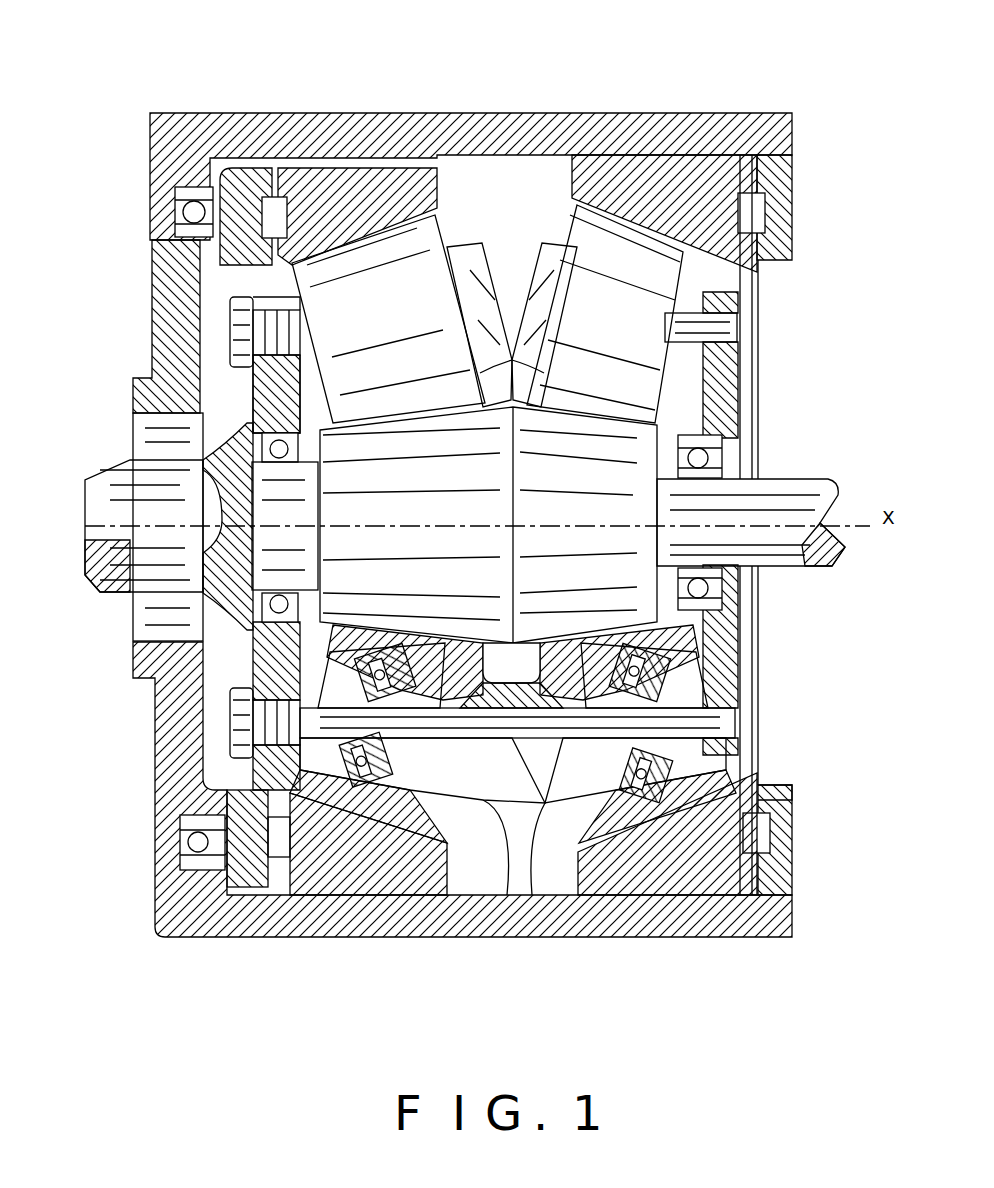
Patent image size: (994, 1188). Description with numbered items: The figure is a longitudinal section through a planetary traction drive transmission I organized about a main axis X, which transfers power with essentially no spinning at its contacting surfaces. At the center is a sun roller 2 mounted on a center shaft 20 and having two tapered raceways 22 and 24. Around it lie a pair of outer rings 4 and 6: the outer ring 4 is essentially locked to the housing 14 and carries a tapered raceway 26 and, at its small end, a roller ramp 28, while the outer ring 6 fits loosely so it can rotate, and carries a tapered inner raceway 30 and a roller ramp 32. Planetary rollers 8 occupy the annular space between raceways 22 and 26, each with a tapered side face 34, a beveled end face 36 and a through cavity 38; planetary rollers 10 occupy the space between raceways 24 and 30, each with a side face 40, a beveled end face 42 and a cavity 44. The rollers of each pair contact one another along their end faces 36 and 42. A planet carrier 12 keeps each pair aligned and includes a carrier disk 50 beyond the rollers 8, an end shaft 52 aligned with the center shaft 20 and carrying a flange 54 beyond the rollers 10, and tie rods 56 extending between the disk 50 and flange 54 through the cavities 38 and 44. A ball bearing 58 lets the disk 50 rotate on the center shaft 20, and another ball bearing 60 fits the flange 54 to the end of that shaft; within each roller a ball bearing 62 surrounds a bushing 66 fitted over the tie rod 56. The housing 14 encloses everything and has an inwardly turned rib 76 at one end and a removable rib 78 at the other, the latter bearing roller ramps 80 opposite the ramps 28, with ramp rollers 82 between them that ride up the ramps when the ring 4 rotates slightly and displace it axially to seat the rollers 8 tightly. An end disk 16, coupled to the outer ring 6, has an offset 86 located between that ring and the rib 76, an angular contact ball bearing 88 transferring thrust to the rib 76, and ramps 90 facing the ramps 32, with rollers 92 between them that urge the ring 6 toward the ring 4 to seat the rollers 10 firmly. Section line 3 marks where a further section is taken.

The planetary traction drive transmission I is at (745, 97).
The sun roller 2 is at (617, 465).
The section line 3 is at (592, 620).
The outer ring 4 is at (668, 165).
The outer ring 6 is at (350, 195).
The planetary rollers 8 is at (618, 162).
The planetary rollers 10 is at (414, 270).
The planet carrier 12 is at (745, 425).
The housing 14 is at (283, 132).
The end disk 16 is at (157, 290).
The center shaft 20 is at (830, 503).
The tapered raceway 22 is at (558, 402).
The tapered raceway 24 is at (420, 402).
The tapered raceway 26 is at (622, 240).
The roller ramp 28 is at (745, 890).
The tapered inner raceway 30 is at (366, 262).
The roller ramp 32 is at (270, 195).
The tapered side face 34 is at (640, 880).
The beveled end face 36 is at (560, 800).
The internal cavity 38 is at (705, 730).
The side face 40 is at (370, 790).
The beveled end face 42 is at (500, 775).
The cavity 44 is at (240, 690).
The carrier disk 50 is at (710, 375).
The end shaft 52 is at (105, 490).
The flange 54 is at (280, 365).
The tie rods 56 is at (682, 718).
The ball bearing 58 is at (700, 460).
The ball bearing 60 is at (255, 605).
The ball bearing 62 is at (280, 660).
The bushing 66 is at (370, 790).
The rib 76 is at (172, 163).
The removable rib 78 is at (766, 140).
The roller ramps 80 is at (770, 835).
The ramp roller 82 is at (775, 800).
The offset 86 is at (300, 883).
The angular contact ball bearing 88 is at (180, 842).
The ramps 90 is at (285, 860).
The rollers 92 is at (295, 797).